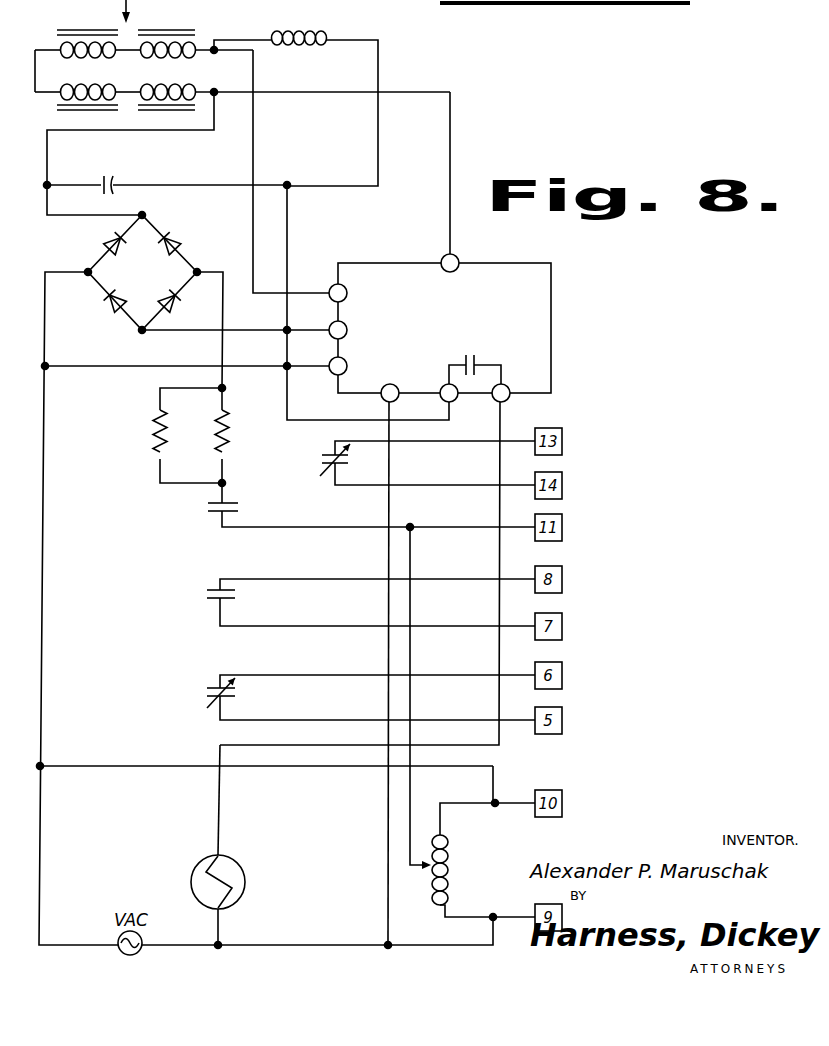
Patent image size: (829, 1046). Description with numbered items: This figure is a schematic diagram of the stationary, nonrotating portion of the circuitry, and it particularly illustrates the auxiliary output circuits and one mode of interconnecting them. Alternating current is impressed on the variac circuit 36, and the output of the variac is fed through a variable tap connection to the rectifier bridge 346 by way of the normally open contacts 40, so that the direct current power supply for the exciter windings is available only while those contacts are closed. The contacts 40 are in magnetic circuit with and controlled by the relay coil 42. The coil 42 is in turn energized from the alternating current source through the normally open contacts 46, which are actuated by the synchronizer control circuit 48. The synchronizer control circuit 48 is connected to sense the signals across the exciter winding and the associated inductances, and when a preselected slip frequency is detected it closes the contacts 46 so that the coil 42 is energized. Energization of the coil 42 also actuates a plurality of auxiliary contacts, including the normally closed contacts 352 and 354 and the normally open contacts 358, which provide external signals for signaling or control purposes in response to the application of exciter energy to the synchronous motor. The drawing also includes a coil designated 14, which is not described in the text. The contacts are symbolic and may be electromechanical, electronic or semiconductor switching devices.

The coil 14 is at (294, 30).
The rectifier bridge 346 is at (143, 273).
The synchronizer control circuit 48 is at (528, 299).
The normally open contacts 46 is at (474, 354).
The normally closed auxiliary contacts 352 is at (322, 463).
The normally open contacts 40 is at (208, 508).
The normally open auxiliary contacts 358 is at (205, 592).
The normally closed auxiliary contacts 354 is at (205, 685).
The relay coil 42 is at (238, 862).
The variac circuit 36 is at (450, 869).